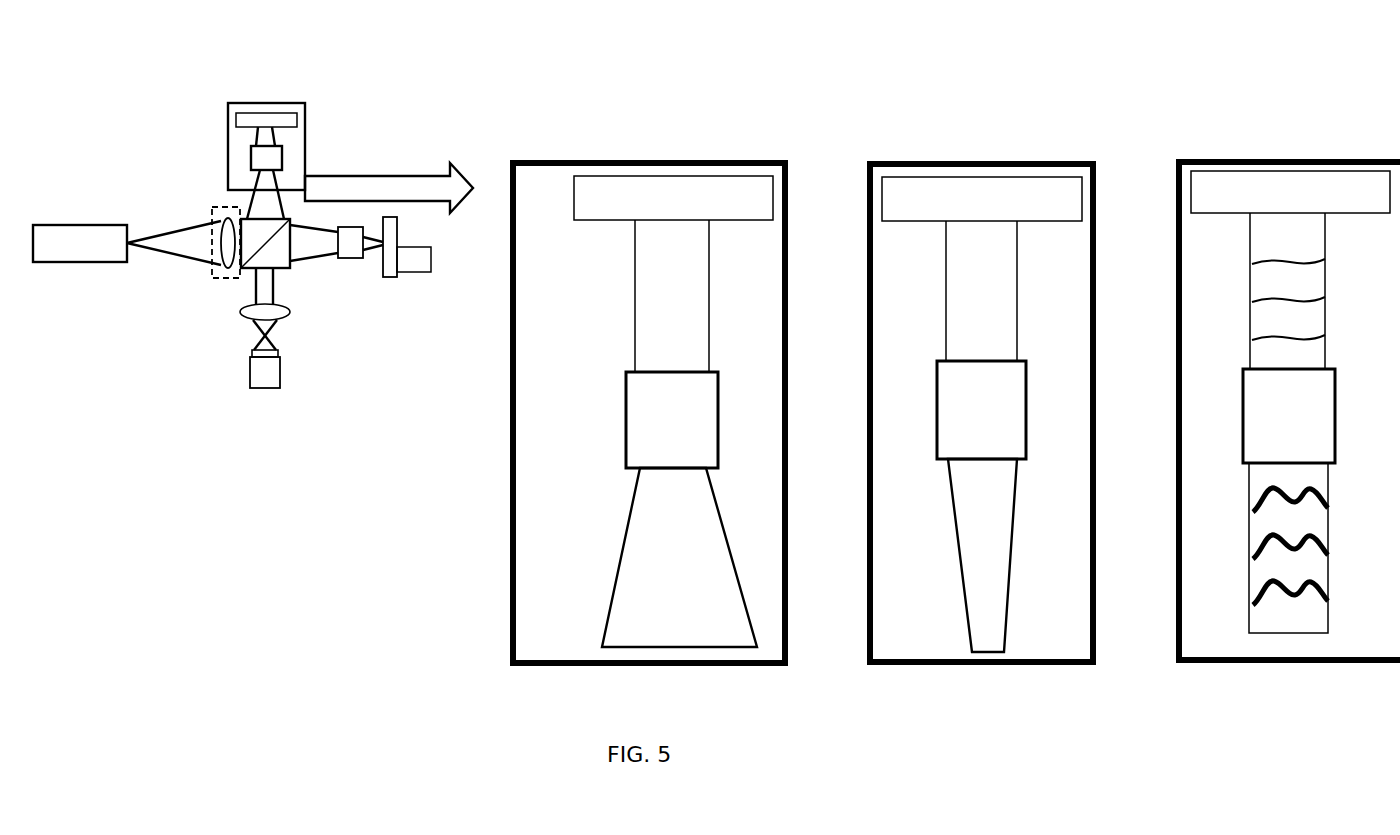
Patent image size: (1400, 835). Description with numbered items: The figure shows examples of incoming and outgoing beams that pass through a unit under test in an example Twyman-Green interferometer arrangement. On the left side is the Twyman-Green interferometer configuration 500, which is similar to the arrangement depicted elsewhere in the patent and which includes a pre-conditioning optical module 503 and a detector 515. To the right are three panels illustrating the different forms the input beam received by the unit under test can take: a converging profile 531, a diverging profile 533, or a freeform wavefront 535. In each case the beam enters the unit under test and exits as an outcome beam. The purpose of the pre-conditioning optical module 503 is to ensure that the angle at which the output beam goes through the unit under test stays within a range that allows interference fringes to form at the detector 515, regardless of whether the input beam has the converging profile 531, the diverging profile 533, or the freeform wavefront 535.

The Twyman-Green interferometer configuration 500 is at (80, 145).
The pre-conditioning optical module 503 is at (224, 285).
The detector 515 is at (255, 394).
The converging profile 531 is at (590, 644).
The diverging profile 533 is at (943, 648).
The freeform wavefront 535 is at (1237, 642).